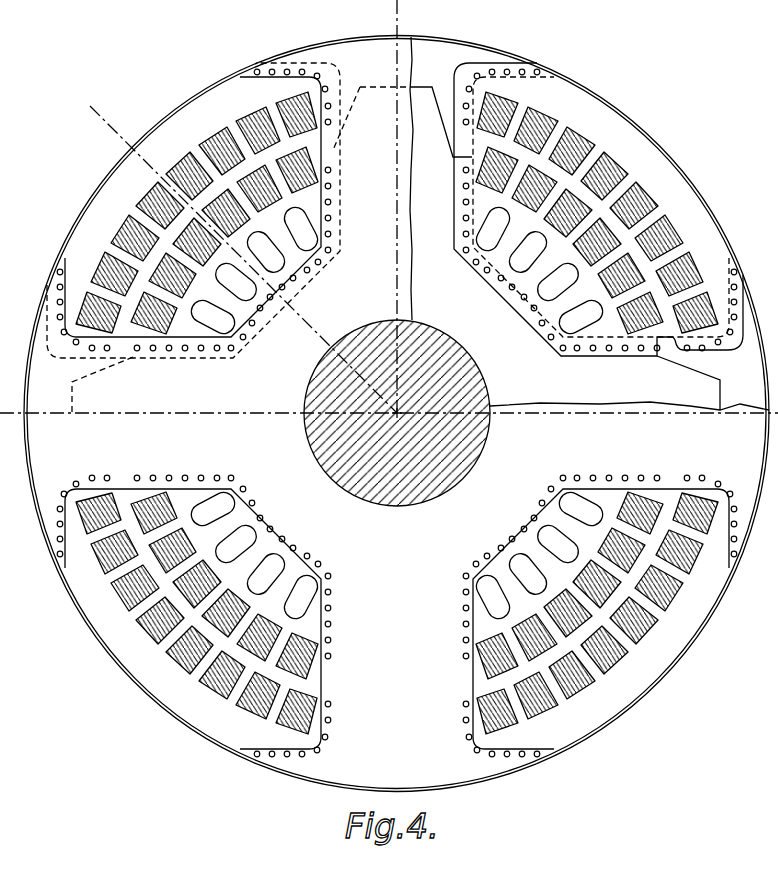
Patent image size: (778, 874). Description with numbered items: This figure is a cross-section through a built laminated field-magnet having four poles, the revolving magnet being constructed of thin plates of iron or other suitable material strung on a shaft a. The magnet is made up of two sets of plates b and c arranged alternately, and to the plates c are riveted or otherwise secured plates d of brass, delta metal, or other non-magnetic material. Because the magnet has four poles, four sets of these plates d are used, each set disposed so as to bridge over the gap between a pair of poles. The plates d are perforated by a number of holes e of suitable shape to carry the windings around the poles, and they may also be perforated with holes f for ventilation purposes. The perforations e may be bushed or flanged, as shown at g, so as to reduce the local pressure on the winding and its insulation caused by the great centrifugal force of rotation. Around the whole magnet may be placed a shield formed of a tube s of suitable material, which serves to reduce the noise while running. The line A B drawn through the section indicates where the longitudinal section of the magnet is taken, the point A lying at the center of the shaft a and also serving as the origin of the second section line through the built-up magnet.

The section line point A is at (389, 405).
The section line point B is at (411, 206).
The shaft a is at (393, 413).
The plates b is at (420, 225).
The plates c is at (85, 102).
The plates d is at (138, 140).
The holes e is at (225, 140).
The holes f is at (546, 540).
The bushing or flange g is at (255, 112).
The tube s is at (396, 414).